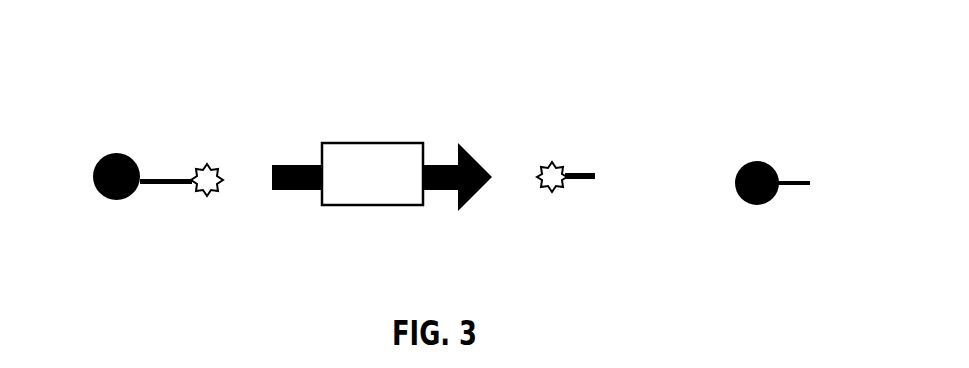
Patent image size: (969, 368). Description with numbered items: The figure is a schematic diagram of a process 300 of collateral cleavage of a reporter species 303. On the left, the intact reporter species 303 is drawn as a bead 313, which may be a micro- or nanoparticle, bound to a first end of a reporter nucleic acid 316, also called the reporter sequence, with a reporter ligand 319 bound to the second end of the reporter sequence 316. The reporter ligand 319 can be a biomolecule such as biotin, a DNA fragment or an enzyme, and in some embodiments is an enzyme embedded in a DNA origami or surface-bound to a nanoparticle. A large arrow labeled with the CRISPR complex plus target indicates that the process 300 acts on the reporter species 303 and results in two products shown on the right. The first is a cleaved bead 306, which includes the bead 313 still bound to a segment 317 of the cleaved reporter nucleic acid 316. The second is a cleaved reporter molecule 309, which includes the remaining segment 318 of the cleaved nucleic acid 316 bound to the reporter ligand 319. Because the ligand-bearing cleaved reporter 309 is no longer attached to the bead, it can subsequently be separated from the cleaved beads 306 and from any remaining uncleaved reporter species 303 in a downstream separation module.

The process of collateral cleavage 300 is at (341, 40).
The reporter species 303 is at (133, 96).
The cleaved bead 306 is at (747, 126).
The cleaved reporter molecule 309 is at (542, 141).
The bead 313 is at (110, 154).
The reporter nucleic acid 316 is at (163, 180).
The segment of the cleaved reporter nucleic acid 317 is at (793, 179).
The remaining segment of the cleaved nucleic acid 318 is at (582, 180).
The reporter ligand 319 is at (214, 167).